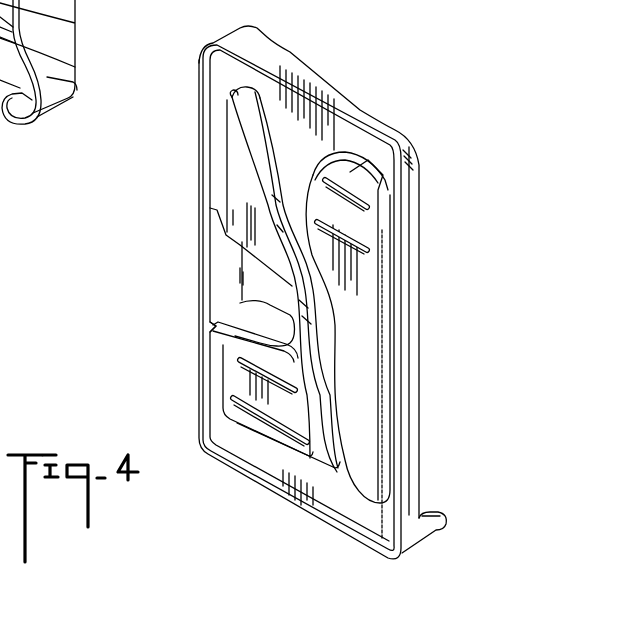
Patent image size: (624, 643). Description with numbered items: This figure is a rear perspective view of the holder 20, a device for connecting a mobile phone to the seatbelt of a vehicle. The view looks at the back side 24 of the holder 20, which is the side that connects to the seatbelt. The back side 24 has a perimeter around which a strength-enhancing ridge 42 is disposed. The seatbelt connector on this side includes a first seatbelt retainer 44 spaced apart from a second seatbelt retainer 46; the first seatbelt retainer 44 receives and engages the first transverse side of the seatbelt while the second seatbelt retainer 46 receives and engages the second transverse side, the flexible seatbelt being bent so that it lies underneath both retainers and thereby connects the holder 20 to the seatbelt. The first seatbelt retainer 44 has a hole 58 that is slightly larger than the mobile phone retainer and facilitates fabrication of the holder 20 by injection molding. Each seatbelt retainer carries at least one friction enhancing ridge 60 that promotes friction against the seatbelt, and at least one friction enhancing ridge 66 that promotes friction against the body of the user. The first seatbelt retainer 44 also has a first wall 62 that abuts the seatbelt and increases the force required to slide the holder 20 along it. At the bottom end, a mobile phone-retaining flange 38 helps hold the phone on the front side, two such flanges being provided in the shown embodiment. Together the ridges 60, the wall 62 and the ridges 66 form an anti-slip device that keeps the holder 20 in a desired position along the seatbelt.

The holder 20 is at (389, 60).
The back side 24 is at (181, 230).
The mobile phone-retaining flange 38 is at (415, 533).
The strength-enhancing ridge 42 is at (310, 80).
The first seatbelt retainer 44 is at (243, 173).
The second seatbelt retainer 46 is at (360, 342).
The hole 58 is at (263, 290).
The friction enhancing ridge 60 is at (75, 23).
The first wall 62 is at (75, 64).
The friction enhancing ridge 66 is at (367, 250).